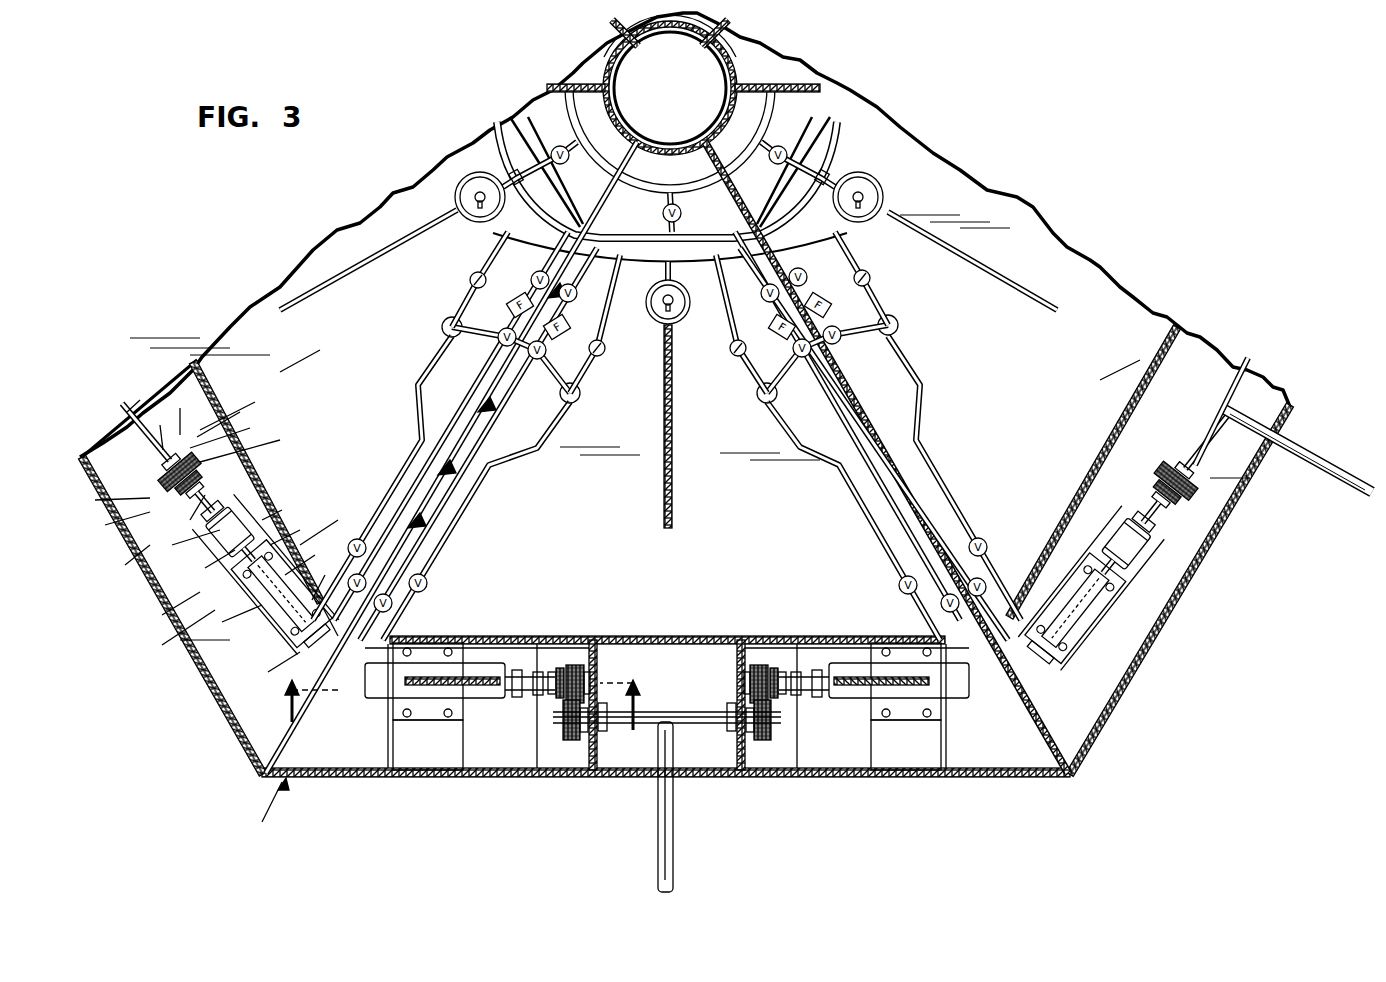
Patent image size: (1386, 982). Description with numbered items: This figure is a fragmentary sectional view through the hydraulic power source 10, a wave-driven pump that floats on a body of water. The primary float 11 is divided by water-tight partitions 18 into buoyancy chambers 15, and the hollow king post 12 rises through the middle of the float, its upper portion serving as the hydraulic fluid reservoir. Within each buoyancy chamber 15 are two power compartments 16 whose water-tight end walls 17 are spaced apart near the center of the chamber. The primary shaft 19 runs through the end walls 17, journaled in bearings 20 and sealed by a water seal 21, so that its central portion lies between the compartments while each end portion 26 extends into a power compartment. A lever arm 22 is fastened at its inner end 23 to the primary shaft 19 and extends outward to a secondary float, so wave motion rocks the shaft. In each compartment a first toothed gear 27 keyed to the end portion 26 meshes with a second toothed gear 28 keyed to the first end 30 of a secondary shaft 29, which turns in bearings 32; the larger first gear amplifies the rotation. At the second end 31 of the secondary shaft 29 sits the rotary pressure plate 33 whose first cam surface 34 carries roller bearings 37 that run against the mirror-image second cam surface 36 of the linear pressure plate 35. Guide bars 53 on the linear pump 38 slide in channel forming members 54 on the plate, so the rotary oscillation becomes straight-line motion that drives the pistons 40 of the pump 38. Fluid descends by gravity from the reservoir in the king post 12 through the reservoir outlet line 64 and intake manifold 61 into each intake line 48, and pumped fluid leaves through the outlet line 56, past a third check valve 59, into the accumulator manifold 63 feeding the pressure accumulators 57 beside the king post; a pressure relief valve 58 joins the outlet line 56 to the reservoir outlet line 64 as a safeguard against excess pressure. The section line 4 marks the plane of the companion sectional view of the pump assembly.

The section line 4- 4 is at (462, 705).
The hydraulic power source 10 is at (1160, 225).
The primary float 11 is at (270, 805).
The king post 12 is at (600, 65).
The buoyancy chambers 15 is at (312, 400).
The power compartments 16 is at (158, 580).
The end walls 17 is at (212, 392).
The partitions 18 is at (625, 33).
The primary shaft 19 is at (140, 410).
The bearings 20 is at (1247, 492).
The water seal 21 is at (1215, 455).
The lever arms 22 is at (683, 882).
The first or inner end 23 is at (1240, 420).
The end portion 26 is at (1228, 545).
The first toothed gear 27 is at (1240, 518).
The second toothed gear 28 is at (1140, 470).
The secondary shaft 29 is at (1130, 482).
The first end 30 is at (1150, 455).
The second end 31 is at (1110, 510).
The bearings 32 is at (1160, 460).
The rotary pressure plate 33 is at (1132, 565).
The first cam surface 34 is at (1135, 583).
The linear pressure plate 35 is at (1182, 603).
The second cam surface 36 is at (1075, 555).
The roller bearings 37 is at (872, 663).
The linear pump 38 is at (1040, 590).
The pistons 40 is at (1102, 627).
The intake line 48 is at (1068, 700).
The guide bars 53 is at (1078, 674).
The channel forming members 54 is at (1172, 626).
The outlet line 56 is at (415, 402).
The pressure accumulators 57 is at (448, 183).
The pressure relief valve 58 is at (441, 328).
The third check valve 59 is at (468, 282).
The intake manifold 61 is at (1060, 722).
The accumulator manifold 63 is at (860, 120).
The reservoir outlet line 64 is at (405, 466).